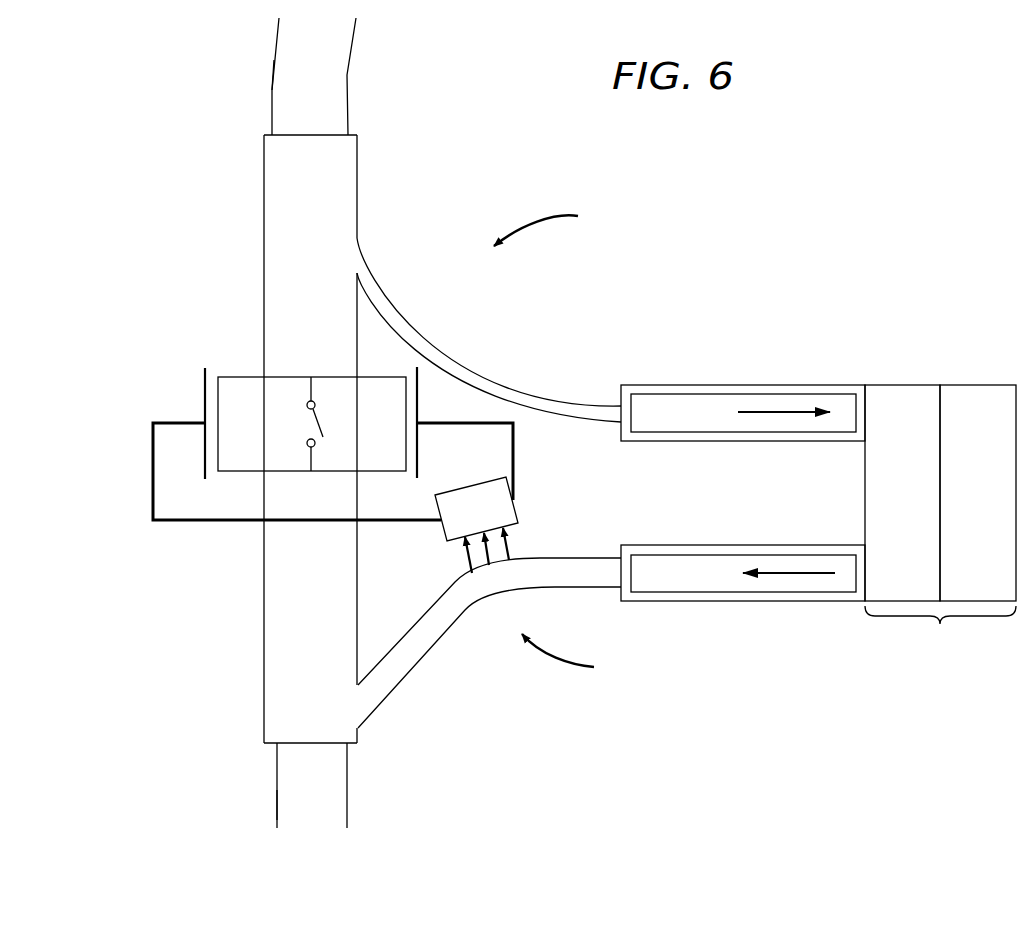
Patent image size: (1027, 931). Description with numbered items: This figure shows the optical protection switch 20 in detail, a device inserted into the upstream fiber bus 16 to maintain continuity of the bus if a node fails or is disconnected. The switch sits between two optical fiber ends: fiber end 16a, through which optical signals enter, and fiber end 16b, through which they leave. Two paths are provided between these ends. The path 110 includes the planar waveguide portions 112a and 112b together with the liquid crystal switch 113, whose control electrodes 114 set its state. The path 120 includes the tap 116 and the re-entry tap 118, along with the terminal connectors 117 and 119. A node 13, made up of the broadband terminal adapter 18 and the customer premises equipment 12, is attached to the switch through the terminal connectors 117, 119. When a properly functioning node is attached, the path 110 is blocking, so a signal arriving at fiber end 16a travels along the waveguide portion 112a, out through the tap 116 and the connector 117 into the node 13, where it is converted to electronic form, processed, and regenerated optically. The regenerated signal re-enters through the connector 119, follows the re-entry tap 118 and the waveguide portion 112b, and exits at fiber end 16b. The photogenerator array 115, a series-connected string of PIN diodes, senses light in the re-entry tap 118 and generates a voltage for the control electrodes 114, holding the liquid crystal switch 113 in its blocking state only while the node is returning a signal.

The customer premises equipment 12 is at (991, 385).
The node 13 is at (940, 629).
The upstream bus 16 is at (348, 72).
The optical fiber end 16a is at (272, 86).
The optical fiber end 16b is at (277, 803).
The broadband terminal adapter 18 is at (917, 385).
The optical protection switch 20 is at (547, 223).
The path 110 is at (258, 277).
The planar waveguide portion 112a is at (264, 152).
The planar waveguide portion 112b is at (264, 712).
The liquid crystal switch 113 is at (242, 377).
The control electrodes 114 is at (205, 409).
The photogenerator array 115 is at (517, 517).
The tap 116 is at (492, 383).
The terminal connector 117 is at (621, 397).
The re-entry tap 118 is at (464, 614).
The terminal connector 119 is at (700, 602).
The path 120 is at (576, 656).